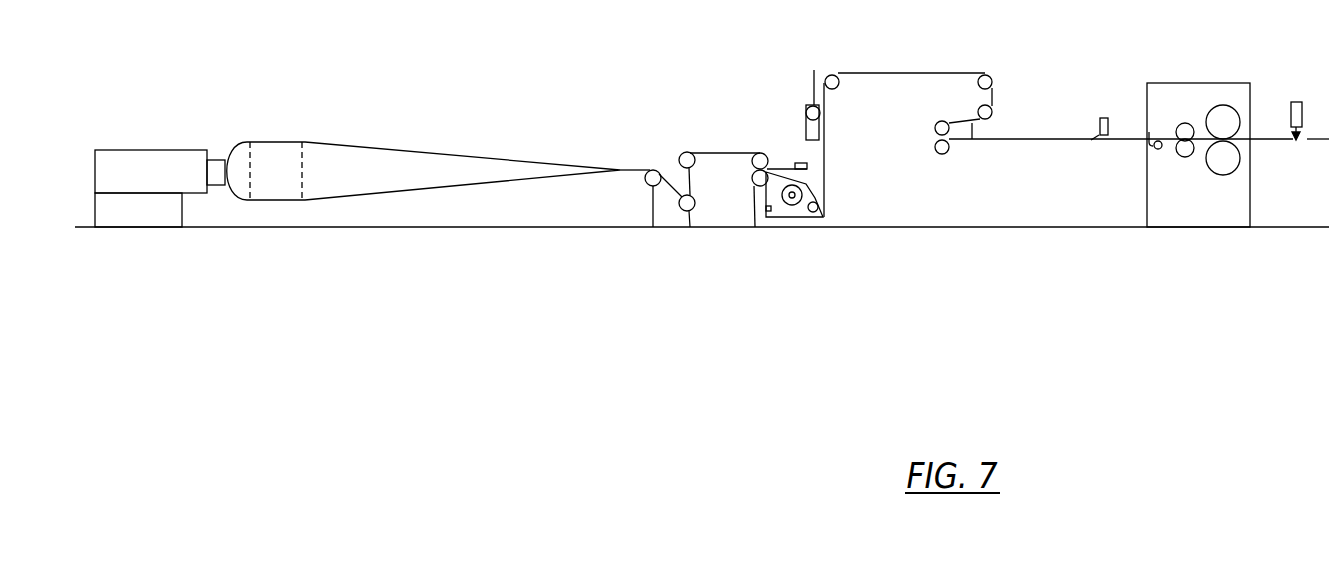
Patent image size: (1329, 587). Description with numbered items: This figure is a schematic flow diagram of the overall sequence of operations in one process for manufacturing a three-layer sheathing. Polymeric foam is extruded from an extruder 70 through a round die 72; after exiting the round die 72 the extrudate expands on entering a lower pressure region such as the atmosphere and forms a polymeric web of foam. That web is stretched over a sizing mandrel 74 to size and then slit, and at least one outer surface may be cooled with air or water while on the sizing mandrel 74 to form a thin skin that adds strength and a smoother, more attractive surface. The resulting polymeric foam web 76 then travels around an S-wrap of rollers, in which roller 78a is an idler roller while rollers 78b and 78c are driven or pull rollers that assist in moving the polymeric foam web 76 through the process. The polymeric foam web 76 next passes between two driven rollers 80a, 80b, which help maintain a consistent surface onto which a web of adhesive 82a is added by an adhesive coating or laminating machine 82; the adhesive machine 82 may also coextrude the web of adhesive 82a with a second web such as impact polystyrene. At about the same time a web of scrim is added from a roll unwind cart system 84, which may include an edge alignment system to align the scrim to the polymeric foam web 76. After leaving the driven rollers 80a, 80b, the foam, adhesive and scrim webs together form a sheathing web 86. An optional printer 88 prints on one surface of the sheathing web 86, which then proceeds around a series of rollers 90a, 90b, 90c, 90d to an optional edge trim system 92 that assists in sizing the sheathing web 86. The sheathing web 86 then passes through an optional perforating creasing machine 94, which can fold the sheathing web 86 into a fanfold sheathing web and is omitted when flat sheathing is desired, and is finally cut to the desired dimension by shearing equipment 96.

The extruder 70 is at (144, 150).
The round die 72 is at (213, 160).
The sizing mandrel 74 is at (283, 141).
The polymeric foam web 76 is at (648, 170).
The idler roller 78a is at (653, 227).
The driven roller 78b is at (691, 227).
The driven roller 78c is at (687, 152).
The driven roller 80a is at (756, 153).
The driven roller 80b is at (752, 182).
The adhesive machine 82 is at (800, 162).
The web of adhesive 82a is at (789, 166).
The roll unwind cart system 84 is at (798, 218).
The sheathing web 86 is at (766, 204).
The printer 88 is at (817, 70).
The roller 90a is at (983, 74).
The roller 90b is at (993, 109).
The roller 90c is at (972, 131).
The roller 90d is at (951, 152).
The edge trim system 92 is at (1099, 118).
The perforating creasing machine 94 is at (1218, 83).
The shearing equipment 96 is at (1296, 102).